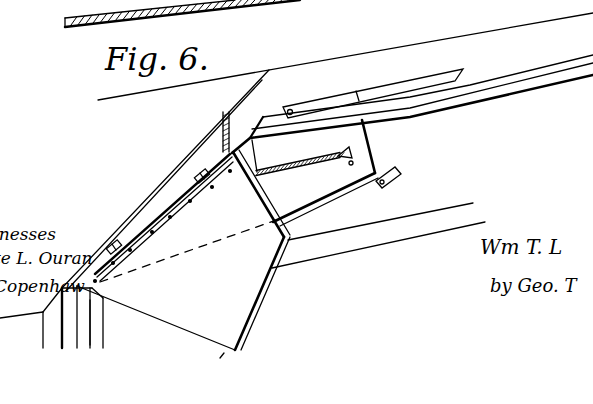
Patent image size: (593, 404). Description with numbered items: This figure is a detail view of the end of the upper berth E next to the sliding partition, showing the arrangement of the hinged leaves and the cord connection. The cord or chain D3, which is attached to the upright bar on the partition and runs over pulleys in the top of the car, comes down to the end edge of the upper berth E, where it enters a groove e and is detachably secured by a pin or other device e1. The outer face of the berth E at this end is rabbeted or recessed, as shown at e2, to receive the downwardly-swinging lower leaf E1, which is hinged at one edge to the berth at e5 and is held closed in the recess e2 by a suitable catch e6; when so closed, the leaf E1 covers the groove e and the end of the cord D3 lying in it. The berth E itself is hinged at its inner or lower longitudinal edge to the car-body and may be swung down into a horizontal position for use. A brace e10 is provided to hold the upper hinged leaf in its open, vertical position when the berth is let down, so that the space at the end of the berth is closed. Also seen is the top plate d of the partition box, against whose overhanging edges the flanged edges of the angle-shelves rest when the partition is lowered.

The cord or chain D3 is at (262, 102).
The upper berth E is at (403, 72).
The lower leaf E1 is at (240, 283).
The groove e is at (325, 173).
The pin e1 is at (300, 168).
The recess e2 is at (340, 147).
The hinge e5 is at (119, 249).
The catch e6 is at (401, 176).
The brace e10 is at (330, 95).
The top plate d is at (83, 323).